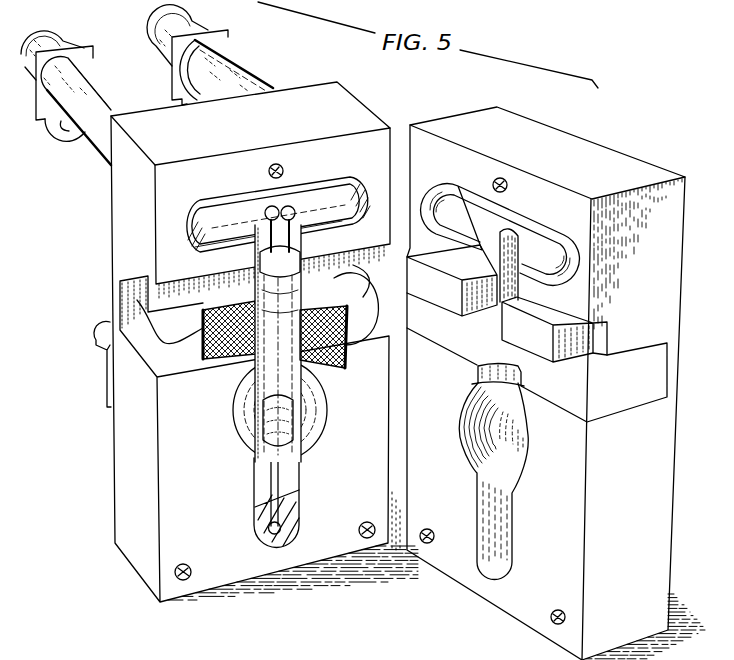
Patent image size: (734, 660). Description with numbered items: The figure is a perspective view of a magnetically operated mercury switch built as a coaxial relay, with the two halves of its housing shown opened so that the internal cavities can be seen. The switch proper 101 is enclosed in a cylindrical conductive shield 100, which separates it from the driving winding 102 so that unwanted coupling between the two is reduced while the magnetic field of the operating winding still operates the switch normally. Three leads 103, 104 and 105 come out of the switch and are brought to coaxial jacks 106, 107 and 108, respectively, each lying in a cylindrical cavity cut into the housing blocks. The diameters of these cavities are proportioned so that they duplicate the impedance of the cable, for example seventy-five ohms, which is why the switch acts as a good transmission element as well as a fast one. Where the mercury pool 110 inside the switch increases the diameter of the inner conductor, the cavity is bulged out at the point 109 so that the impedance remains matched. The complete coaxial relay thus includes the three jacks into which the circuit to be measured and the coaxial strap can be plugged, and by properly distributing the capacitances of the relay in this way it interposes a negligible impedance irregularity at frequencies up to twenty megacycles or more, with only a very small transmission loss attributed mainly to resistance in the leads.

The cylindrical conductive shield 100 is at (302, 285).
The switch proper 101 is at (266, 350).
The driving winding 102 is at (336, 370).
The lead 103 is at (256, 246).
The lead 104 is at (297, 241).
The lead 105 is at (282, 488).
The coaxial jack 106 is at (97, 137).
The coaxial jack 107 is at (244, 71).
The coaxial jack 108 is at (100, 348).
The bulging out of the cavity 109 is at (234, 440).
The mercury pool 110 is at (294, 422).